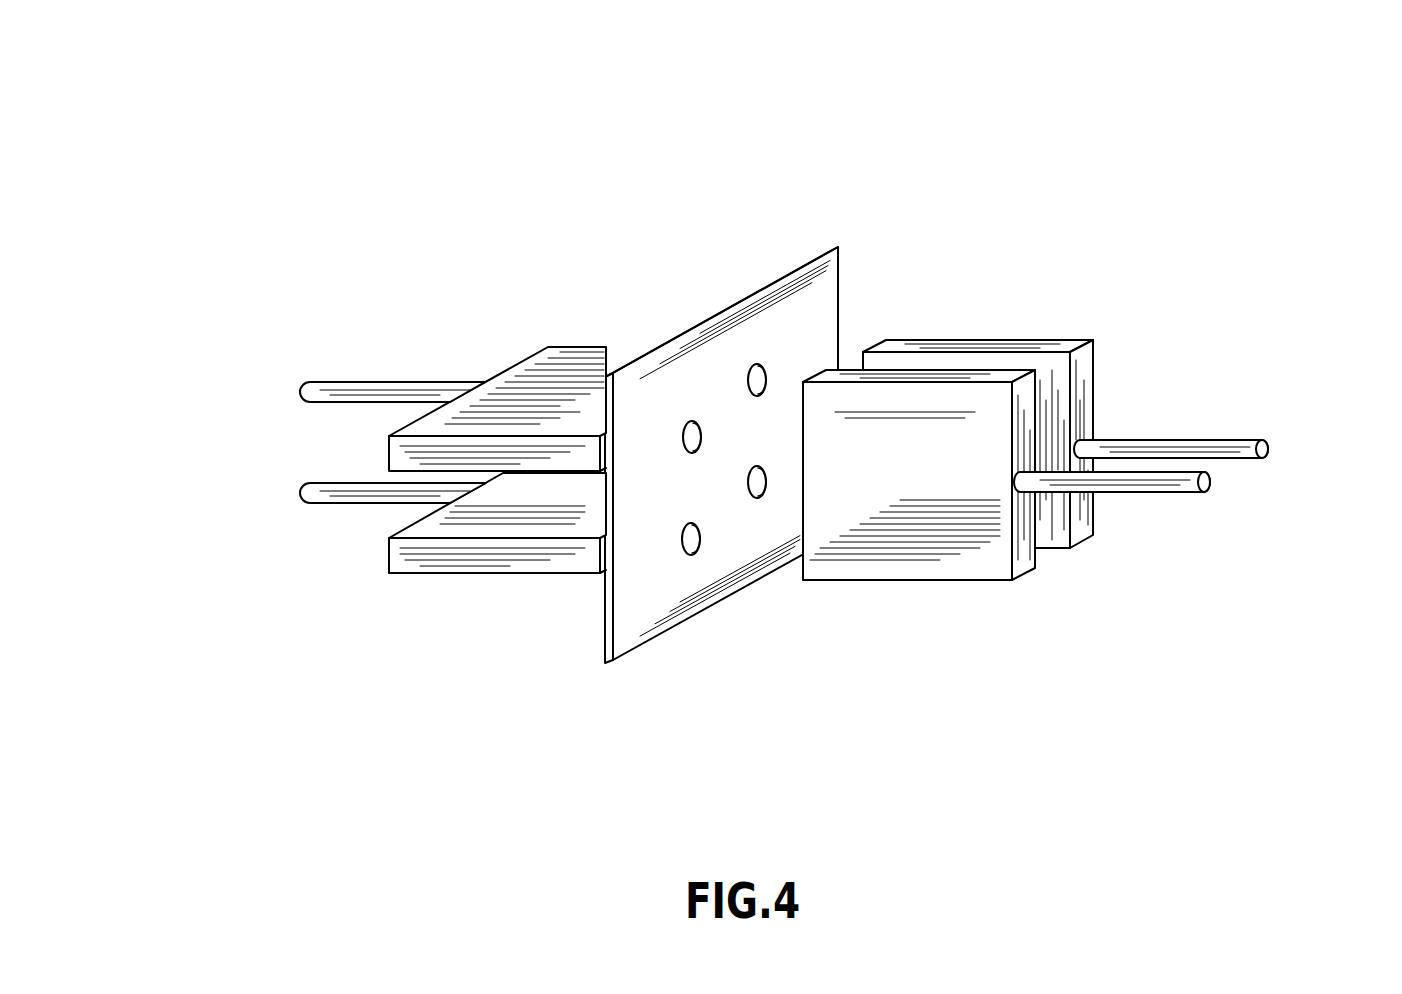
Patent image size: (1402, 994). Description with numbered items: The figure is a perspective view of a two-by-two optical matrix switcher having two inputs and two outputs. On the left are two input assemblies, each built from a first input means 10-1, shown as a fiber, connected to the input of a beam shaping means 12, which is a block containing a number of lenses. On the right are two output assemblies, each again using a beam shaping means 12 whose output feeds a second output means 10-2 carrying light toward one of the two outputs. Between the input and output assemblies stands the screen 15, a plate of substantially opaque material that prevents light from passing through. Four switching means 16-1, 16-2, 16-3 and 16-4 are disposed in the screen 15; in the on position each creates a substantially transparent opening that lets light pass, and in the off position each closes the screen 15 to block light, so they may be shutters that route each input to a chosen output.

The first input means 10-1 is at (333, 382).
The second output means 10-2 is at (1160, 438).
The beam shaping means 12 is at (547, 348).
The screen 15 is at (827, 317).
The switching means 16-1 is at (690, 421).
The switching means 16-2 is at (757, 364).
The switching means 16-3 is at (691, 555).
The switching means 16-4 is at (757, 498).